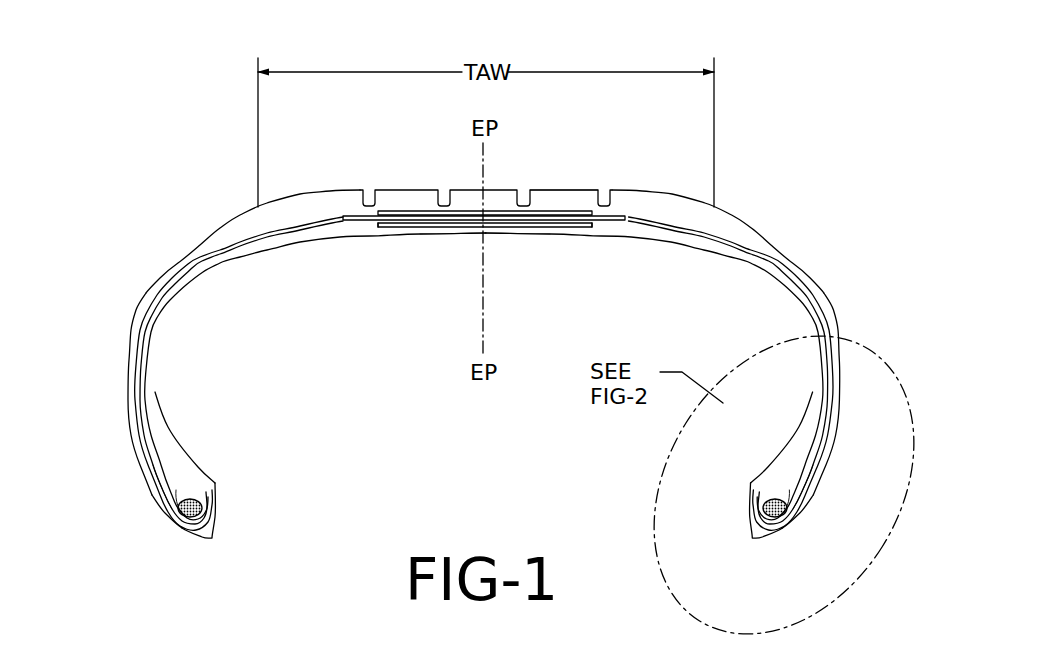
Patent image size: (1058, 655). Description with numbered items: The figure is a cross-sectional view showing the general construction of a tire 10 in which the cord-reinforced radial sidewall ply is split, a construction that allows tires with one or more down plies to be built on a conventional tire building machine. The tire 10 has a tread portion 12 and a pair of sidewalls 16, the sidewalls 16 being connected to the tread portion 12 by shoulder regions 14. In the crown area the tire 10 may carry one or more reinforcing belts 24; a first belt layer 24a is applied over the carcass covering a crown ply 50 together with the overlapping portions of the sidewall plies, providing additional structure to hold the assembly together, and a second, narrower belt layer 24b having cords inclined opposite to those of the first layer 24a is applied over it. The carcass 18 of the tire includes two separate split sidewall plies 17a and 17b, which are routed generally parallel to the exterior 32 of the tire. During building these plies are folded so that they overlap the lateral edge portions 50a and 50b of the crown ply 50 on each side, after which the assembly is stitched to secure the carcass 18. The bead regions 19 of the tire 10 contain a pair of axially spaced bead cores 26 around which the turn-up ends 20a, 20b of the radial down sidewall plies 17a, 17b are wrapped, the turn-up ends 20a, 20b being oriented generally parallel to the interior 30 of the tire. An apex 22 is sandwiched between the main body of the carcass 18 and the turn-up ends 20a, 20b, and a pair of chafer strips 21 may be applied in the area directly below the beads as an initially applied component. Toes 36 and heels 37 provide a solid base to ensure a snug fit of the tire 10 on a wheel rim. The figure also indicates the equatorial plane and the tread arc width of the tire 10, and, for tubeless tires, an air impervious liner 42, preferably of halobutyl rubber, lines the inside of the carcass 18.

The tire 10 is at (209, 118).
The tread portion 12 is at (455, 188).
The shoulder regions 14 is at (217, 235).
The sidewalls 16 is at (130, 322).
The sidewall ply 17a is at (127, 387).
The sidewall ply 17b is at (841, 387).
The carcass 18 is at (202, 283).
The bead regions 19 is at (222, 530).
The turn-up end 20a is at (216, 490).
The turn-up end 20b is at (752, 490).
The chafer strips 21 is at (157, 490).
The apex 22 is at (168, 457).
The reinforcing belts 24 is at (403, 207).
The first belt layer 24a is at (612, 216).
The second belt layer 24b is at (552, 210).
The bead cores 26 is at (178, 498).
The interior 30 is at (446, 265).
The exterior 32 is at (562, 178).
The toes 36 is at (192, 533).
The heels 37 is at (163, 518).
The air impervious liner 42 is at (157, 395).
The crown ply 50 is at (522, 235).
The lateral edge portion 50a is at (392, 235).
The lateral edge portion 50b is at (577, 235).